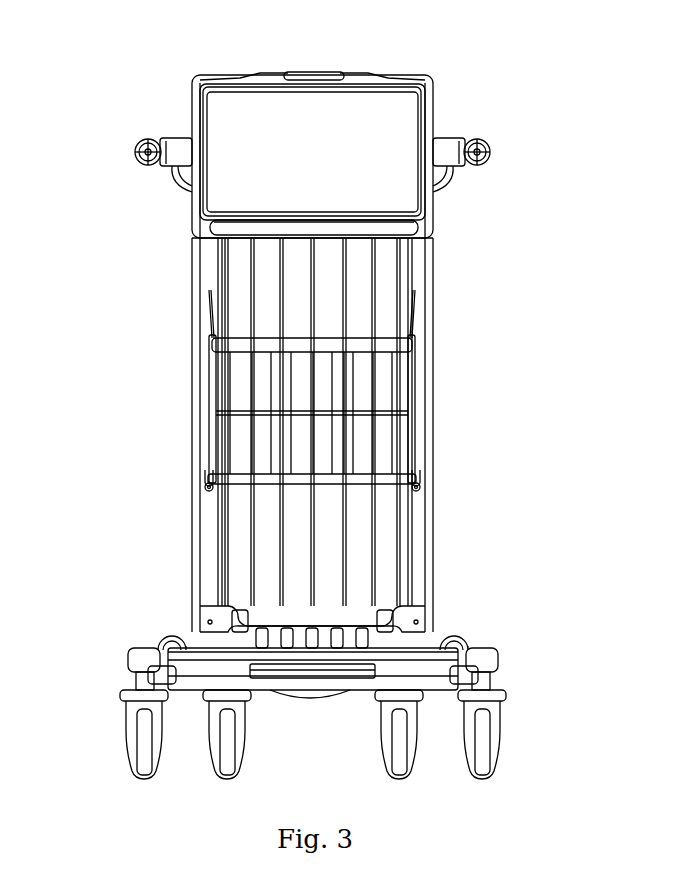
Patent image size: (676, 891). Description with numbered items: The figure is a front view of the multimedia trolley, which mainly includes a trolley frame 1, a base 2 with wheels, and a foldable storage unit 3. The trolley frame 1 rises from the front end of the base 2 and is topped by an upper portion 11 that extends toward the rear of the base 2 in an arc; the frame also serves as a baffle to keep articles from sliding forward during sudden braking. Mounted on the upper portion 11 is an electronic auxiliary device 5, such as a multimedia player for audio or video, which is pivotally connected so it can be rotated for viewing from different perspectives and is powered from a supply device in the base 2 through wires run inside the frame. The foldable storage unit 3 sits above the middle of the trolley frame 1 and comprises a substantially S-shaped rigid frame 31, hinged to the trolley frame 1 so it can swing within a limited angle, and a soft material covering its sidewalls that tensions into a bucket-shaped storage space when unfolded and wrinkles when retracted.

The trolley frame 1 is at (190, 282).
The upper portion 11 is at (177, 153).
The electronic auxiliary device 5 is at (387, 128).
The foldable storage unit 3 is at (414, 408).
The rigid frame 31 is at (419, 482).
The base 2 is at (163, 629).